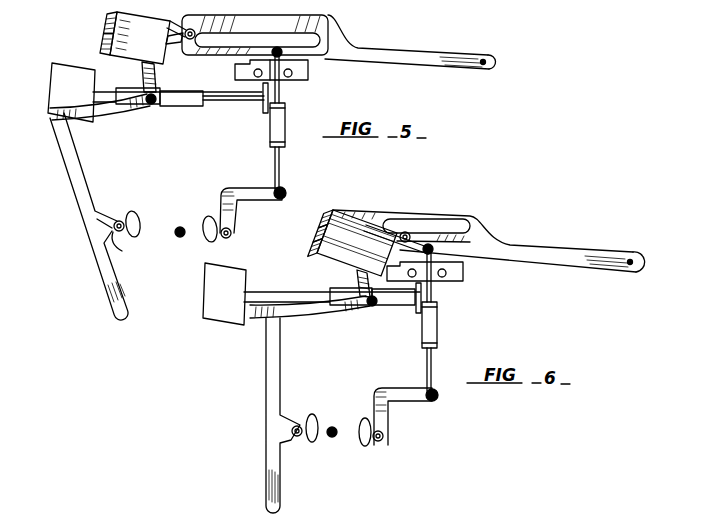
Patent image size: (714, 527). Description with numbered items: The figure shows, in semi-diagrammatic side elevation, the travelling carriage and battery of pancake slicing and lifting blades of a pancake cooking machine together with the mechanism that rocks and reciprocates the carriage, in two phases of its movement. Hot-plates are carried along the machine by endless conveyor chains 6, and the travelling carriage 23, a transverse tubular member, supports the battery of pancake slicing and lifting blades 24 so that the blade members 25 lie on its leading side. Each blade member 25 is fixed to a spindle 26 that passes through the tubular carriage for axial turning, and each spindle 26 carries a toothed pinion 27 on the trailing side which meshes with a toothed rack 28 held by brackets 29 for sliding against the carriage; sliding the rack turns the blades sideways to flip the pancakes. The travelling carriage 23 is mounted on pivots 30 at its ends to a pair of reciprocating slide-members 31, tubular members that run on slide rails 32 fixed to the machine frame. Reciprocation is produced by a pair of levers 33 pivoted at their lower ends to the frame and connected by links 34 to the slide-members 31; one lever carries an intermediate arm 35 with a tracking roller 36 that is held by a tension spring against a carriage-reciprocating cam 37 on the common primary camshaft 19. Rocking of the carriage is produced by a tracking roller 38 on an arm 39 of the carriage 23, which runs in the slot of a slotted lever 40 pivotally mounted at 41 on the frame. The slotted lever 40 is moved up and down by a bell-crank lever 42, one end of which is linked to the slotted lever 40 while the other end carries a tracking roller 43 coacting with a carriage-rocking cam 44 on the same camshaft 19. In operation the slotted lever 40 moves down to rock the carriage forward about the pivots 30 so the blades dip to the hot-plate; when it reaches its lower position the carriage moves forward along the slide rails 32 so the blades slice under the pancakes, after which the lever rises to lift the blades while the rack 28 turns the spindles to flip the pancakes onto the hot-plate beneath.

In FIG. 5, the endless conveyor chains 6 is at (306, 80).
In FIG. 6, the endless conveyor chains 6 is at (465, 279).
In FIG. 5, the common primary camshaft 19 is at (179, 238).
In FIG. 6, the common primary camshaft 19 is at (333, 427).
In FIG. 5, the travelling carriage 23 is at (140, 38).
In FIG. 6, the travelling carriage 23 is at (342, 248).
In FIG. 5, the battery of pancake slicing and lifting blades 24 is at (179, 20).
In FIG. 5, the blade members 25 is at (251, 71).
In FIG. 5, the spindle 26 is at (172, 55).
In FIG. 5, the toothed pinion 27 is at (108, 22).
In FIG. 6, the toothed pinion 27 is at (332, 216).
In FIG. 5, the toothed rack 28 is at (104, 43).
In FIG. 6, the toothed rack 28 is at (318, 240).
In FIG. 6, the brackets 29 is at (321, 256).
In FIG. 5, the pivots 30 is at (138, 76).
In FIG. 6, the pivots 30 is at (352, 278).
In FIG. 5, the reciprocating slide-members 31 is at (186, 107).
In FIG. 6, the reciprocating slide-members 31 is at (400, 306).
In FIG. 5, the slide rails 32 is at (234, 102).
In FIG. 5, the levers 33 is at (99, 212).
In FIG. 6, the levers 33 is at (276, 373).
In FIG. 5, the links 34 is at (112, 115).
In FIG. 6, the links 34 is at (322, 309).
In FIG. 5, the intermediate arm 35 is at (118, 236).
In FIG. 6, the tracking roller 36 is at (297, 423).
In FIG. 5, the carriage-reciprocating cam 37 is at (141, 222).
In FIG. 6, the carriage-reciprocating cam 37 is at (312, 445).
In FIG. 5, the tracking roller 38 is at (255, 35).
In FIG. 6, the tracking roller 38 is at (410, 232).
In FIG. 6, the arm 39 is at (392, 230).
In FIG. 5, the slotted lever 40 is at (352, 51).
In FIG. 6, the slotted lever 40 is at (477, 233).
In FIG. 5, the pivot 41 is at (487, 56).
In FIG. 6, the pivot 41 is at (630, 258).
In FIG. 5, the bell-crank lever 42 is at (247, 190).
In FIG. 6, the bell-crank lever 42 is at (395, 414).
In FIG. 5, the tracking roller 43 is at (233, 233).
In FIG. 6, the tracking roller 43 is at (386, 440).
In FIG. 6, the carriage-rocking cam 44 is at (364, 444).